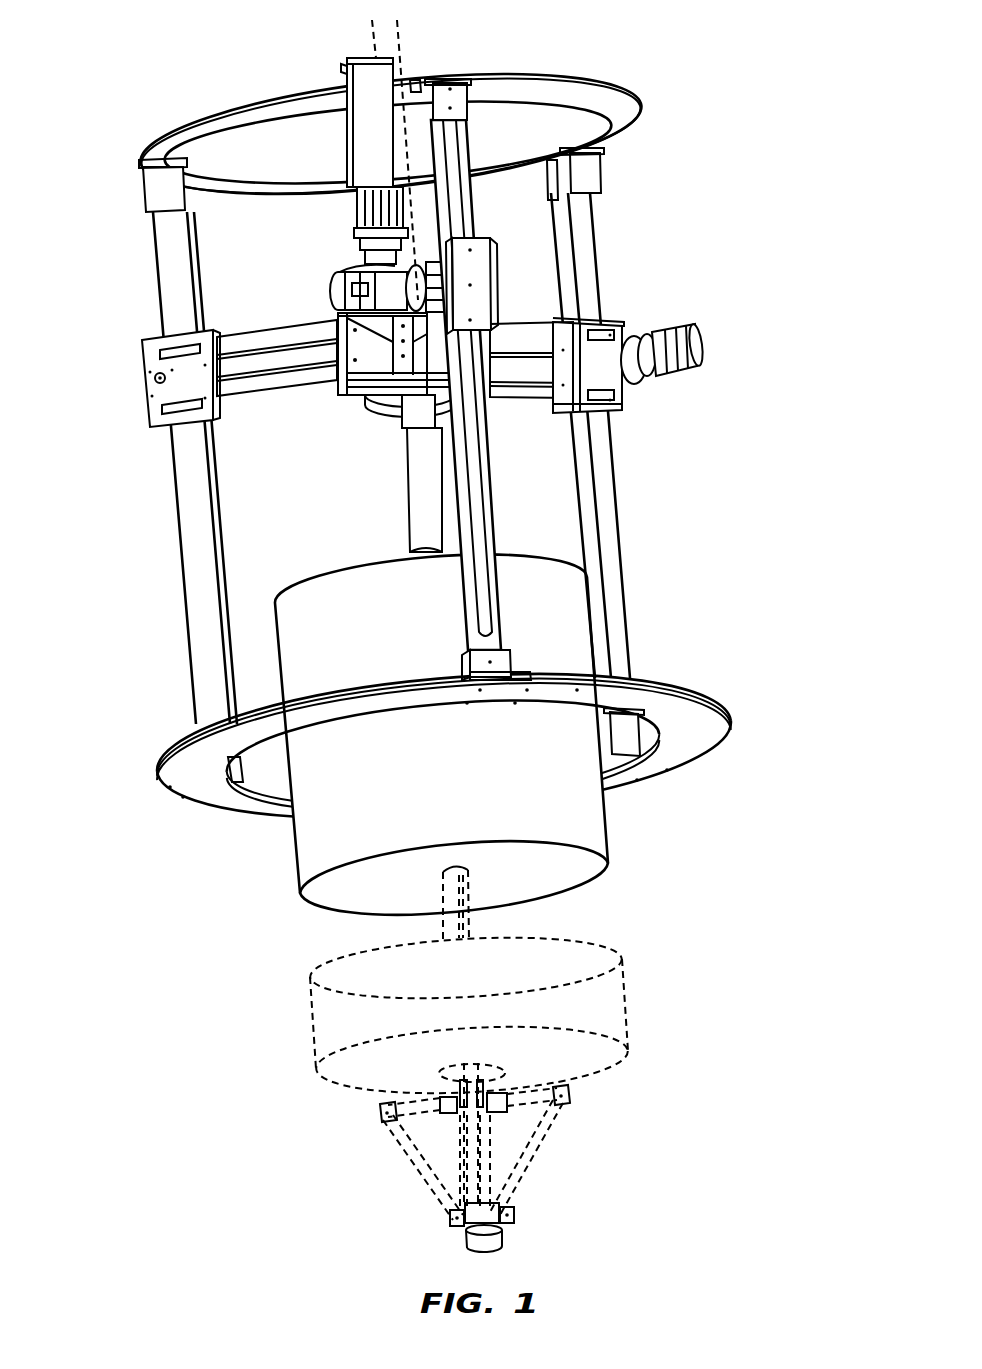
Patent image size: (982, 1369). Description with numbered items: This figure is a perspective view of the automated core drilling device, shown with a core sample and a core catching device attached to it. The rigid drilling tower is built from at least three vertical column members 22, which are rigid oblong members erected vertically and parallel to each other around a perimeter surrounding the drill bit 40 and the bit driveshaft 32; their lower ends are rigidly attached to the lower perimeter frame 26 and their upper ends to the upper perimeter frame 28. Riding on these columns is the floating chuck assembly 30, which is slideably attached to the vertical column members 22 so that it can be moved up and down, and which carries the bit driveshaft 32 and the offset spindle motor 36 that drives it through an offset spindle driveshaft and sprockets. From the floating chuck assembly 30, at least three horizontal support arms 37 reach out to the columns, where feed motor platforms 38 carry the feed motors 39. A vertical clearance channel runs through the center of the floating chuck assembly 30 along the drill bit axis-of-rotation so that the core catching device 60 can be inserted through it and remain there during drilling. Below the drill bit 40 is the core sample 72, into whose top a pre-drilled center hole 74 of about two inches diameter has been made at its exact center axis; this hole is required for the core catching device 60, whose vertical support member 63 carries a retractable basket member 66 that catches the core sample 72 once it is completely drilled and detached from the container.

The vertical column member 22 is at (563, 236).
The lower perimeter frame 26 is at (722, 728).
The upper perimeter frame 28 is at (644, 101).
The floating chuck assembly 30 is at (351, 410).
The bit driveshaft 32 is at (410, 510).
The offset spindle motor 36 is at (349, 133).
The horizontal support arm 37 is at (265, 342).
The feed motor platform 38 is at (147, 397).
The feed motor 39 is at (700, 333).
The drill bit 40 is at (610, 836).
The core catching device 60 is at (521, 636).
The vertical support member 63 is at (403, 35).
The retractable basket member 66 is at (533, 1170).
The core sample 72 is at (626, 1000).
The pre-drilled center hole 74 is at (452, 1068).